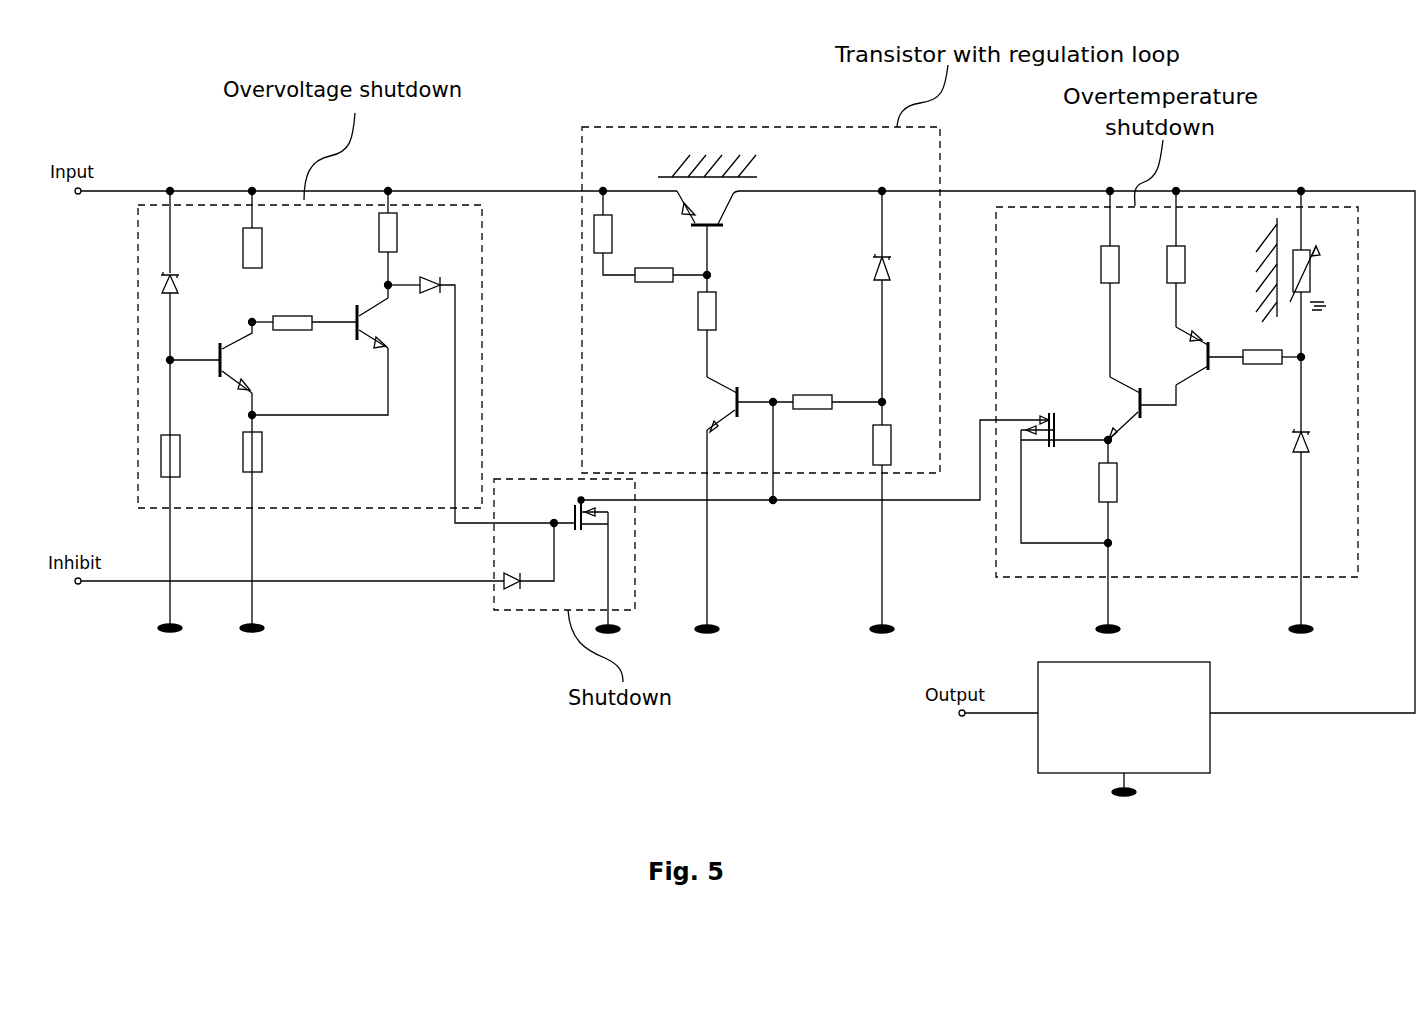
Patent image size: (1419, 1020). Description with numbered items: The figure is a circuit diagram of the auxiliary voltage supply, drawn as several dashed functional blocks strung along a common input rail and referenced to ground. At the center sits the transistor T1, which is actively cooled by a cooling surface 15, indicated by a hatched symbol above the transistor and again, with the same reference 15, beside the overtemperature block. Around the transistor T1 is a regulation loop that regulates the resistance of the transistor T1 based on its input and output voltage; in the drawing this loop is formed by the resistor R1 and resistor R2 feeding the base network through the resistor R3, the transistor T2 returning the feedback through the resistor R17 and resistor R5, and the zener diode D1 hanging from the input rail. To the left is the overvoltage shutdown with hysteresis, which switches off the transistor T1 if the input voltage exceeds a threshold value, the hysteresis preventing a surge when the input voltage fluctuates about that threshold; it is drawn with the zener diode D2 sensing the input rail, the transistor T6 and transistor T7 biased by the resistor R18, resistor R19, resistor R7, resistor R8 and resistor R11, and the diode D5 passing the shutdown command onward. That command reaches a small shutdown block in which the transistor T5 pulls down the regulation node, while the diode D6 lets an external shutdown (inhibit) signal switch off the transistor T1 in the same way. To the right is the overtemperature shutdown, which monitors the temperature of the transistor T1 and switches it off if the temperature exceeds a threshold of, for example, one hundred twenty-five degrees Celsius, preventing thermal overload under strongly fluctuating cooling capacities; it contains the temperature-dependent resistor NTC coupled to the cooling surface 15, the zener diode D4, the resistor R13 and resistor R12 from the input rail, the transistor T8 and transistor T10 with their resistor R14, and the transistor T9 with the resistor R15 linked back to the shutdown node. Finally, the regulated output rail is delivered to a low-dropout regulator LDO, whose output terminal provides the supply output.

The cooling surface 15 is at (717, 168).
The resistor R1 is at (610, 234).
The resistor R2 is at (654, 268).
The resistor R3 is at (715, 311).
The resistor R5 is at (889, 445).
The resistor R7 is at (178, 456).
The resistor R8 is at (260, 452).
The resistor R11 is at (399, 232).
The resistor R12 is at (1187, 264).
The resistor R13 is at (1121, 264).
The resistor R14 is at (1262, 350).
The resistor R15 is at (1119, 482).
The resistor R17 is at (812, 395).
The resistor R18 is at (264, 248).
The resistor R19 is at (292, 316).
The transistor T1 is at (709, 220).
The transistor T2 is at (727, 399).
The shutdown transistor T5 is at (586, 505).
The transistor T6 is at (227, 357).
The transistor T7 is at (366, 317).
The transistor T8 is at (1131, 406).
The transistor T9 is at (1064, 423).
The transistor T10 is at (1196, 359).
The zener diode D1 is at (891, 267).
The zener diode D2 is at (178, 282).
The zener diode D4 is at (1309, 440).
The diode D5 is at (430, 277).
The diode D6 is at (511, 574).
The NTC thermistor NTC is at (1312, 278).
The low-dropout regulator LDO is at (1124, 717).